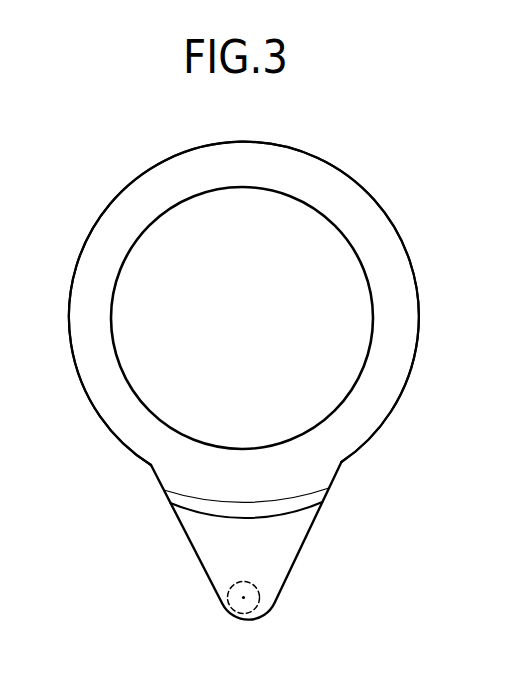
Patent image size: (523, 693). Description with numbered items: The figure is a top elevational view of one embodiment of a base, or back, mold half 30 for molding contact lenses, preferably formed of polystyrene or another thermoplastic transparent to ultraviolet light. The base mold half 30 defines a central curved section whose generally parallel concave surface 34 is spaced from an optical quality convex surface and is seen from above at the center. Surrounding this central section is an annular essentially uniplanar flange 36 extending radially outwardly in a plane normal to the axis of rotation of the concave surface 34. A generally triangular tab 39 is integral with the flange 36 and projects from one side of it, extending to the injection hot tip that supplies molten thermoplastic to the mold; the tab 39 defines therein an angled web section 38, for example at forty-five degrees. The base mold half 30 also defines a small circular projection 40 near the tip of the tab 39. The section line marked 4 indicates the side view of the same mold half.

The base mold half 30 is at (76, 221).
The concave surface 34 is at (246, 316).
The annular flange 36 is at (355, 205).
The web section 38 is at (328, 489).
The tab 39 is at (273, 558).
The circular projection 40 is at (262, 602).
The section line 4- 4 is at (242, 93).